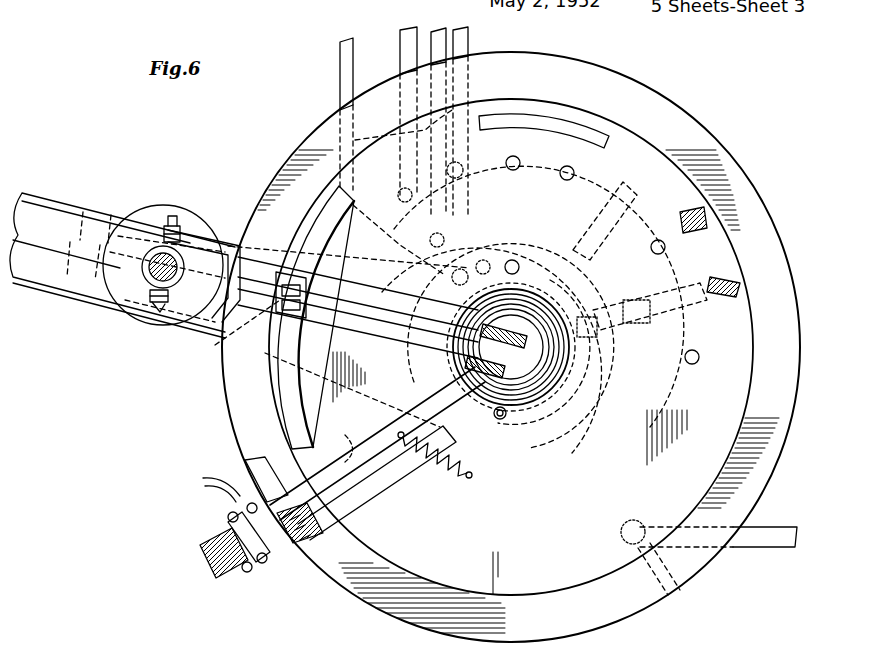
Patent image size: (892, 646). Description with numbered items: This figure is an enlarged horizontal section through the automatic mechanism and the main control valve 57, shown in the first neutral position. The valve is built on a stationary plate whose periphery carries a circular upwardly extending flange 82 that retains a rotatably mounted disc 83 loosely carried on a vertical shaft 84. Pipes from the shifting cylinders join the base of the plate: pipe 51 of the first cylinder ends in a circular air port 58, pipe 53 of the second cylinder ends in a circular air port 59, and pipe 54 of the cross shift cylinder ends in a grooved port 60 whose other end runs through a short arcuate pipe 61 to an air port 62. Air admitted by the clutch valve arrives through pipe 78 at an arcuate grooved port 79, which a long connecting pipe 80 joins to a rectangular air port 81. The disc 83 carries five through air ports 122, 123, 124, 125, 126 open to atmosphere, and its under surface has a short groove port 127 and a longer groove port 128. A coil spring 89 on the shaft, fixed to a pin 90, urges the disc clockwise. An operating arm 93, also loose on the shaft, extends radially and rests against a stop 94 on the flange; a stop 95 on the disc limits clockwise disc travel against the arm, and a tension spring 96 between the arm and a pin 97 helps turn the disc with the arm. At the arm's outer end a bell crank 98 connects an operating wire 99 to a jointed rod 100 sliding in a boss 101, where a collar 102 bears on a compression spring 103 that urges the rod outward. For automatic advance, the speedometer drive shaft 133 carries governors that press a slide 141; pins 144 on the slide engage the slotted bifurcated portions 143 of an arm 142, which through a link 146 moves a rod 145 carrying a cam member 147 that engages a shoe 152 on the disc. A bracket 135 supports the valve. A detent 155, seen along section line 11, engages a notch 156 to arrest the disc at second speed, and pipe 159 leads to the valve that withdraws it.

The section line 11 is at (601, 547).
The pipe 51 is at (462, 48).
The pipe 53 is at (403, 46).
The pipe 54 is at (340, 72).
The main control valve 57 is at (220, 403).
The circular air port 58 is at (470, 162).
The circular air port 59 is at (392, 199).
The grooved port 60 is at (465, 262).
The arcuate pipe 61 is at (567, 280).
The air port 62 is at (587, 338).
The pipe 78 is at (440, 36).
The arcuate grooved port 79 is at (455, 225).
The connecting pipe 80 is at (637, 281).
The rectangular air port 81 is at (625, 350).
The flange 82 is at (757, 223).
The disc 83 is at (526, 501).
The shaft 84 is at (560, 380).
The coil spring 89 is at (540, 402).
The pin 90 is at (505, 418).
The operating arm 93 is at (345, 398).
The stop 94 is at (245, 468).
The stop 95 is at (350, 482).
The tension spring 96 is at (410, 470).
The pin 97 is at (468, 478).
The bell crank 98 is at (210, 562).
The operating wire 99 is at (205, 480).
The jointed rod 100 is at (250, 570).
The boss 101 is at (308, 540).
The collar 102 is at (292, 562).
The compression spring 103 is at (322, 520).
The air port 122 is at (514, 260).
The air port 123 is at (513, 170).
The air port 124 is at (565, 180).
The air port 125 is at (651, 247).
The air port 126 is at (688, 363).
The groove port 127 is at (625, 205).
The groove port 128 is at (655, 310).
The speedometer drive shaft 133 is at (160, 255).
The bracket 135 is at (122, 265).
The slide 141 is at (125, 300).
The arm 142 is at (385, 308).
The bifurcated portions 143 is at (185, 325).
The pins 144 is at (148, 305).
The rod 145 is at (238, 335).
The link 146 is at (288, 278).
The cam member 147 is at (283, 392).
The shoe 152 is at (556, 117).
The detent 155 is at (624, 524).
The notch 156 is at (335, 440).
The pipe 159 is at (780, 525).